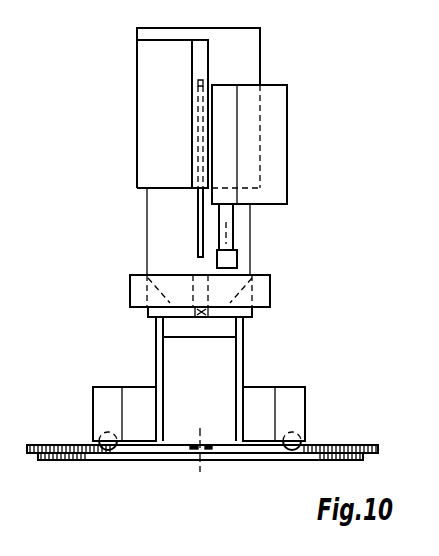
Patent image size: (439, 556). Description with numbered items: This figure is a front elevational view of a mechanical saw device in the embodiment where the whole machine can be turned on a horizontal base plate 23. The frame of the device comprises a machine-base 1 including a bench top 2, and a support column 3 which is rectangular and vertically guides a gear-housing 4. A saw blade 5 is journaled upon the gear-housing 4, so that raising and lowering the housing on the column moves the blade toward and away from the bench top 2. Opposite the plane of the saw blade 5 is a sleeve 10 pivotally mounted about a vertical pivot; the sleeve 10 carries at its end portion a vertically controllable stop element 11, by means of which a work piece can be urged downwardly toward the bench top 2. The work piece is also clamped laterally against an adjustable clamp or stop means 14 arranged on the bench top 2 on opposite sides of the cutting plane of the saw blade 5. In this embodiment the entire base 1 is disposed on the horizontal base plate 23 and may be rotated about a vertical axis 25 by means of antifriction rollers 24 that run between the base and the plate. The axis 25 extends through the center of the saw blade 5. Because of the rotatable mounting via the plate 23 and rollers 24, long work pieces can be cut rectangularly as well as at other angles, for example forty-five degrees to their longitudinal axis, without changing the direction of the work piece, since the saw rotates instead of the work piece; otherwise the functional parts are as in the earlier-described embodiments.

The machine-base 1 is at (156, 355).
The bench top 2 is at (150, 313).
The support column 3 is at (242, 232).
The gear-housing 4 is at (152, 92).
The saw blade 5 is at (200, 217).
The sleeve 10 is at (280, 112).
The stop element 11 is at (230, 258).
The stop means 14 is at (133, 283).
The base plate 23 is at (63, 450).
The antifriction rollers 24 is at (102, 438).
The vertical axis 25 is at (198, 465).